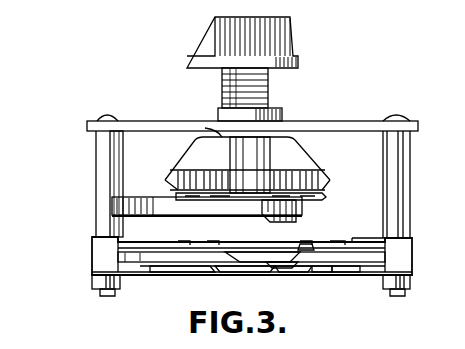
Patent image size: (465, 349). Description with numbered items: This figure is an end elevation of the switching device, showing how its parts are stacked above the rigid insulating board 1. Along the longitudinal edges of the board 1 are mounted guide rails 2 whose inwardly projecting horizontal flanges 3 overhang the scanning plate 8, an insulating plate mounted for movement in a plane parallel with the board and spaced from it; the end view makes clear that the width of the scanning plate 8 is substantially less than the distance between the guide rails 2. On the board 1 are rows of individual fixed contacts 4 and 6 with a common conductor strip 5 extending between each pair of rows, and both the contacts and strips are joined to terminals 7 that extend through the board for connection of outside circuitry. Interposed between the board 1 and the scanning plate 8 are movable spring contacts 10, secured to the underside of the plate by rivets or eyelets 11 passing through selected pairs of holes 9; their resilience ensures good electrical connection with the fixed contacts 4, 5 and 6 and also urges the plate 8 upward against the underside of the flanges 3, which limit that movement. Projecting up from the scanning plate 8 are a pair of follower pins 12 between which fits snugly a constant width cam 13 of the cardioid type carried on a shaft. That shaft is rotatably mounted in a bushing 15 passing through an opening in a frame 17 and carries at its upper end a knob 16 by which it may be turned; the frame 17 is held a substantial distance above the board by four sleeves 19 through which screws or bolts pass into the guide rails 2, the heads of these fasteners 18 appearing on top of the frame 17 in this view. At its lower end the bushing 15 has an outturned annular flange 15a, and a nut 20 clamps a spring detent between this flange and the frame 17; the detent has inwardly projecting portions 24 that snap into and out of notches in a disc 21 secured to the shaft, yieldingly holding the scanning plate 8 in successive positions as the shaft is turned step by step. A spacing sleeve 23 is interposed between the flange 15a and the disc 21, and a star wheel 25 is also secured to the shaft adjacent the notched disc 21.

The board 1 is at (200, 278).
The guide rails 2 is at (92, 257).
The horizontal flanges 3 is at (142, 240).
The fixed contacts 4 is at (340, 274).
The common conductor strip 5 is at (316, 274).
The fixed contacts 6 is at (286, 274).
The terminals 7 is at (262, 282).
The scanning plate 8 is at (276, 254).
The holes 9 is at (251, 285).
The spring contacts 10 is at (418, 262).
The rivets 11 is at (331, 241).
The follower pins 12 is at (252, 242).
The constant width cam 13 is at (155, 208).
The bushing 15 is at (270, 95).
The outturned annular flange 15a is at (212, 134).
The knob 16 is at (285, 40).
The frame 17 is at (344, 120).
The bolt head 18 is at (112, 118).
The sleeves 19 is at (96, 182).
The nut 20 is at (283, 118).
The disc 21 is at (300, 180).
The spacing sleeve 23 is at (236, 160).
The inwardly projecting portions 24 is at (172, 183).
The star wheel 25 is at (312, 197).